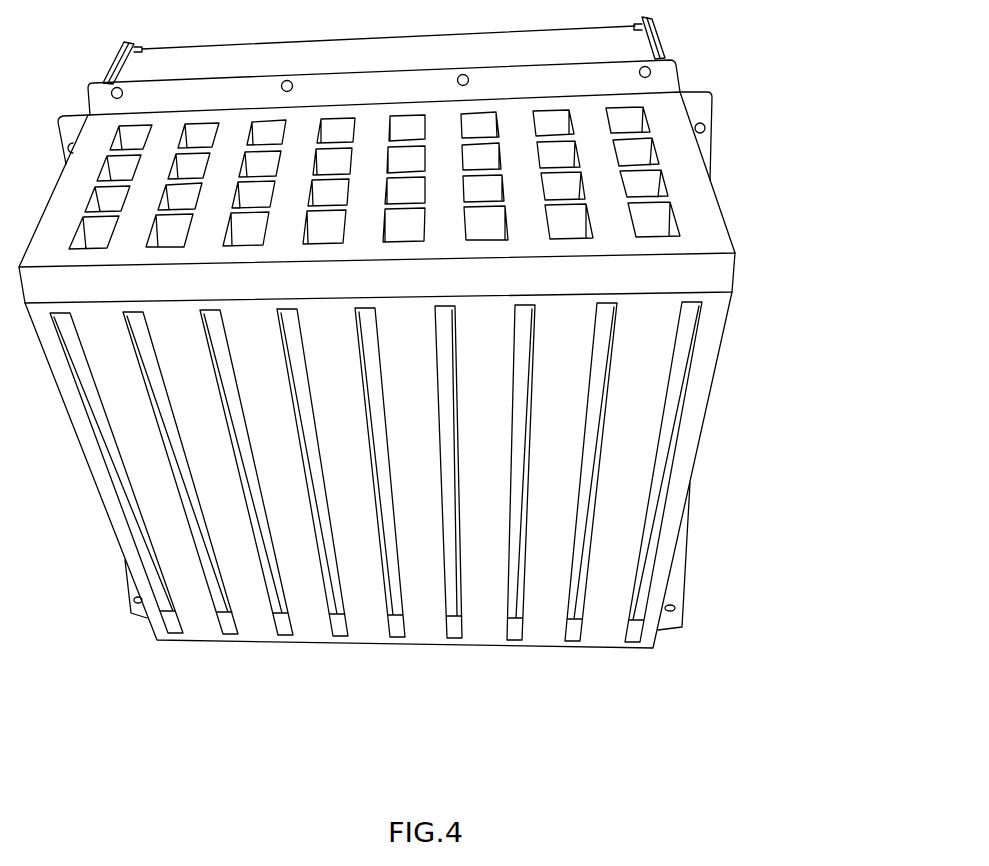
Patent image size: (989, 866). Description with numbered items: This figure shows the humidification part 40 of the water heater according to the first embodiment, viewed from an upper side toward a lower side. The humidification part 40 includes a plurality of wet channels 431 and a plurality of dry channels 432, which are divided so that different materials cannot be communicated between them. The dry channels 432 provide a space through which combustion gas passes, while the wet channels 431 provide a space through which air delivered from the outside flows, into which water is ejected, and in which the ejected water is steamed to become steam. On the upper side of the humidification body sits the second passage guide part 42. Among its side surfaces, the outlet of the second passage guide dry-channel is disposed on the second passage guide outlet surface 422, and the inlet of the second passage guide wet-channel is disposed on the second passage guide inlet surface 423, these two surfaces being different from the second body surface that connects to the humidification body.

The humidification part 40 is at (442, 377).
The second passage guide part 42 is at (442, 370).
The second passage guide outlet surface 422 is at (442, 197).
The second passage guide inlet surface 423 is at (672, 518).
The wet channels 431 is at (656, 475).
The dry channels 432 is at (674, 212).